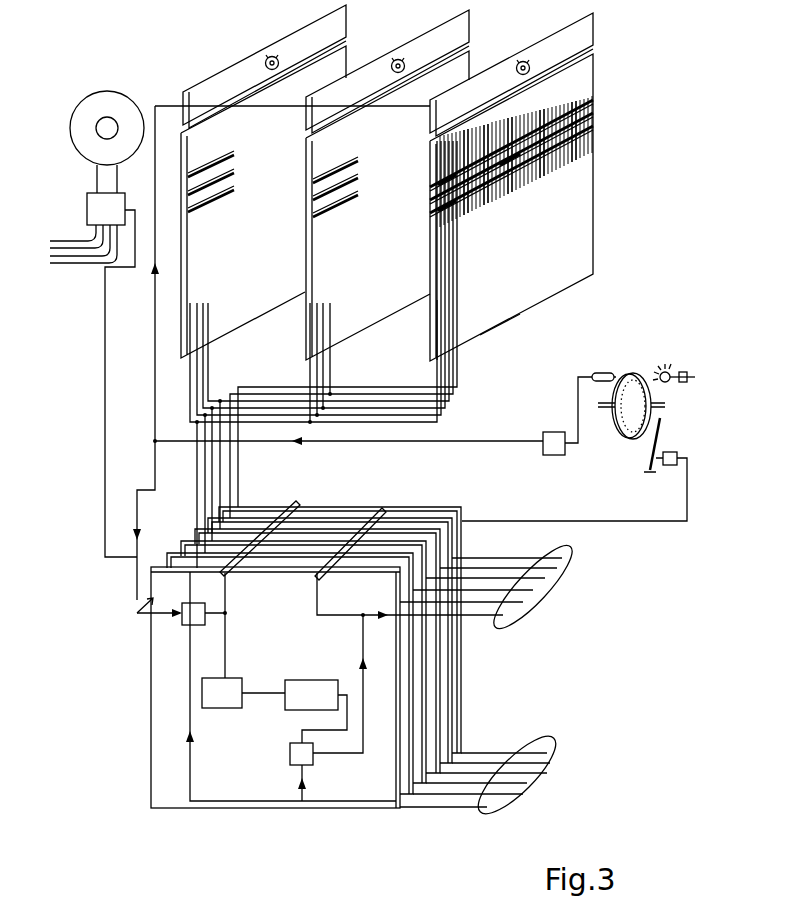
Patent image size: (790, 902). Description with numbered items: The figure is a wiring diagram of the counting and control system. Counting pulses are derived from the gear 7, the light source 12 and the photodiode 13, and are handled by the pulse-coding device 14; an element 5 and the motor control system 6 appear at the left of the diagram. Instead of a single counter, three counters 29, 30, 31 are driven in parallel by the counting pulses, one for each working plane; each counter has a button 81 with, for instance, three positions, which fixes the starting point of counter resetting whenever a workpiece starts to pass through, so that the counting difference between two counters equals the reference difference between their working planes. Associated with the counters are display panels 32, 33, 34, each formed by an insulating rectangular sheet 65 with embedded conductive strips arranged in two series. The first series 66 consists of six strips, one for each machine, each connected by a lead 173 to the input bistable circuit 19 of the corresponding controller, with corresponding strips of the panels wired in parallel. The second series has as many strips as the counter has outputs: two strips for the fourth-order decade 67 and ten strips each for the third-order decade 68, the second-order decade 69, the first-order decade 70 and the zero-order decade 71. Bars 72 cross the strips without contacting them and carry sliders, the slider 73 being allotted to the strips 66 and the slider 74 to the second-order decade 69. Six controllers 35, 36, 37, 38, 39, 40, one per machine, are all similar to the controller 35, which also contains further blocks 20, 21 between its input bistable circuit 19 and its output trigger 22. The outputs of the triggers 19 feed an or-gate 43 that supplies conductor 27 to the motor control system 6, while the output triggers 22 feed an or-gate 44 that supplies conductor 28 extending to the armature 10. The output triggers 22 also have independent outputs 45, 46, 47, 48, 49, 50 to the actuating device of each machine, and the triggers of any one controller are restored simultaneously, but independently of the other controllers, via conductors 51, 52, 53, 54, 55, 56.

The tape reel 5 is at (110, 100).
The motor control system 6 is at (91, 201).
The gear 7 is at (629, 418).
The armature 10 is at (666, 452).
The light source 12 is at (667, 371).
The photodiode 13 is at (601, 373).
The pulse-coding device 14 is at (553, 433).
The input bistable circuit 19 is at (182, 614).
The counter 20 is at (222, 640).
The comparator 21 is at (294, 711).
The output trigger 22 is at (328, 708).
The conductor 27 is at (104, 489).
The conductor 28 is at (553, 519).
The counter 29 is at (511, 74).
The counter 30 is at (387, 71).
The counter 31 is at (264, 66).
The display panel 32 is at (511, 207).
The display panel 33 is at (387, 205).
The display panel 34 is at (263, 202).
The controller 35 is at (275, 687).
The controller 36 is at (399, 808).
The controller 37 is at (418, 797).
The controller 38 is at (436, 703).
The controller 39 is at (448, 718).
The controller 40 is at (458, 738).
The or-gate 43 is at (297, 503).
The or-gate 44 is at (384, 509).
The independent output 45 is at (503, 616).
The independent output 46 is at (523, 603).
The independent output 47 is at (535, 591).
The independent output 48 is at (547, 579).
The independent output 49 is at (558, 568).
The independent output 50 is at (563, 558).
The restoring conductor 51 is at (488, 808).
The restoring conductor 52 is at (524, 794).
The restoring conductor 53 is at (530, 781).
The restoring conductor 54 is at (549, 766).
The restoring conductor 55 is at (552, 756).
The restoring conductor 56 is at (546, 748).
The insulating rectangular sheet 65 is at (497, 320).
The first series of strips 66 is at (438, 330).
The fourth-order decade group 67 is at (470, 156).
The third-order decade group 68 is at (488, 146).
The second-order decade group 69 is at (512, 131).
The first-order decade group 70 is at (545, 116).
The zero-order decade group 71 is at (575, 100).
The bar 72 is at (440, 212).
The slider 73 is at (438, 226).
The slider 74 is at (509, 180).
The button 81 is at (521, 62).
The lead 173 is at (438, 432).